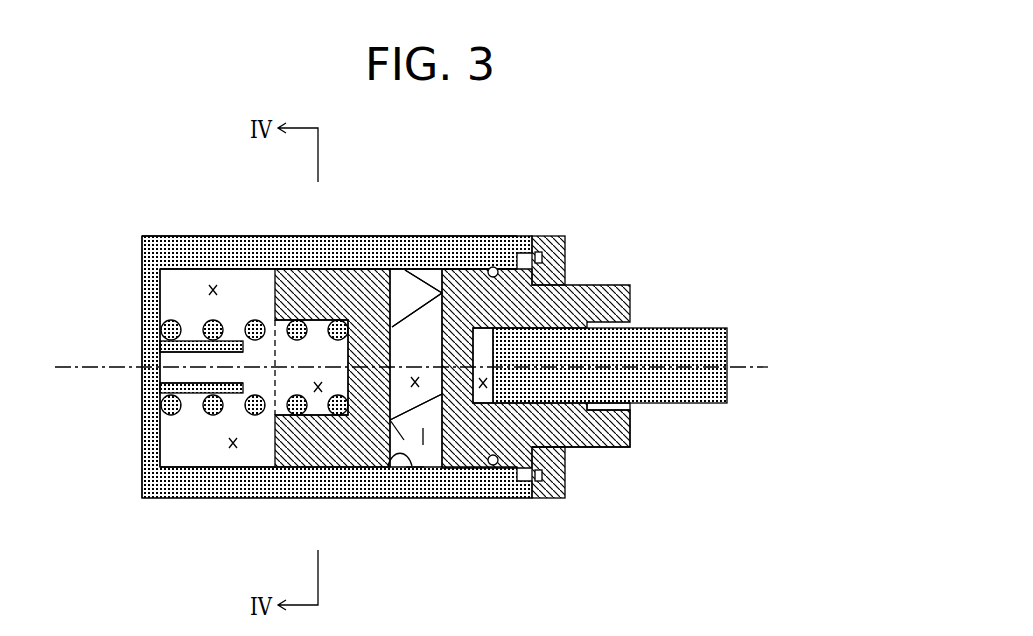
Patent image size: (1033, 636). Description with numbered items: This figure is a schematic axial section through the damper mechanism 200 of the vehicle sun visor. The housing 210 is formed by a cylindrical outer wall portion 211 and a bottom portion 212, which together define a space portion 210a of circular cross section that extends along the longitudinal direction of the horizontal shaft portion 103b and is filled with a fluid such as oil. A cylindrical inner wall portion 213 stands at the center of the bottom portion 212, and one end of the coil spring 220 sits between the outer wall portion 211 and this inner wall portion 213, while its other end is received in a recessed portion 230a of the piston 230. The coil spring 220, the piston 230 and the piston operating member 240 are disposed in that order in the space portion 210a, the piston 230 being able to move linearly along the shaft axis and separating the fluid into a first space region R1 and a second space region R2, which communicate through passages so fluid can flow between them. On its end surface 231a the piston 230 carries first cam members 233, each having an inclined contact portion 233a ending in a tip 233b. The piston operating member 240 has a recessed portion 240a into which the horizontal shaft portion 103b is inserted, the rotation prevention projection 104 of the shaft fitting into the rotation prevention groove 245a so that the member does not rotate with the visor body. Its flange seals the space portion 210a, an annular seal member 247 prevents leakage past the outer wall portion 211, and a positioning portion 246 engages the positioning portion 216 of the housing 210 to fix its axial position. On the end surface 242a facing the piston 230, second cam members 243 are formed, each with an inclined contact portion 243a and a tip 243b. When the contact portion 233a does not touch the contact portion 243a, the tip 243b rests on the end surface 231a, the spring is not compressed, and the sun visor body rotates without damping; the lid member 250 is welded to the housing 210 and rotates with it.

The damper mechanism 200 is at (618, 176).
The housing 210 is at (178, 240).
The outer wall portion 211 is at (216, 245).
The bottom portion 212 is at (150, 430).
The space portion 210a is at (232, 450).
The inner wall portion 213 is at (188, 395).
The coil spring 220 is at (255, 322).
The piston 230 is at (360, 268).
The recessed portion 230a is at (318, 392).
The first cam member 233 is at (404, 293).
The contact portion 233a is at (457, 320).
The tip 233b is at (444, 290).
The end surface 242a is at (421, 266).
The end surface 231a is at (415, 467).
The second cam member 243 is at (423, 430).
The contact portion 243a is at (405, 404).
The tip 243b is at (392, 422).
The piston operating member 240 is at (632, 300).
The recessed portion 240a is at (483, 392).
The rotation prevention groove 245a is at (600, 408).
The rotation prevention projection 104 is at (610, 425).
The horizontal shaft portion 103b is at (705, 346).
The positioning portion 246 is at (520, 257).
The seal member 247 is at (493, 466).
The lid member 250 is at (567, 258).
The positioning portion 216 is at (567, 462).
The first space region R1 is at (416, 378).
The second space region R2 is at (208, 289).